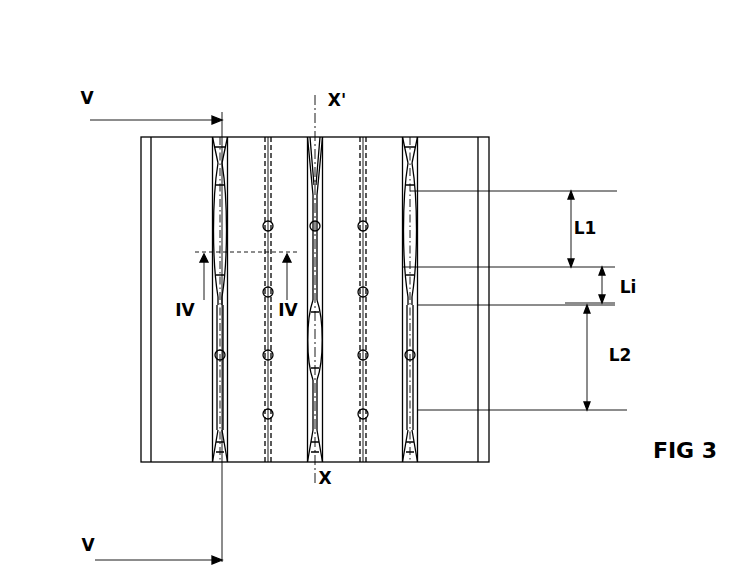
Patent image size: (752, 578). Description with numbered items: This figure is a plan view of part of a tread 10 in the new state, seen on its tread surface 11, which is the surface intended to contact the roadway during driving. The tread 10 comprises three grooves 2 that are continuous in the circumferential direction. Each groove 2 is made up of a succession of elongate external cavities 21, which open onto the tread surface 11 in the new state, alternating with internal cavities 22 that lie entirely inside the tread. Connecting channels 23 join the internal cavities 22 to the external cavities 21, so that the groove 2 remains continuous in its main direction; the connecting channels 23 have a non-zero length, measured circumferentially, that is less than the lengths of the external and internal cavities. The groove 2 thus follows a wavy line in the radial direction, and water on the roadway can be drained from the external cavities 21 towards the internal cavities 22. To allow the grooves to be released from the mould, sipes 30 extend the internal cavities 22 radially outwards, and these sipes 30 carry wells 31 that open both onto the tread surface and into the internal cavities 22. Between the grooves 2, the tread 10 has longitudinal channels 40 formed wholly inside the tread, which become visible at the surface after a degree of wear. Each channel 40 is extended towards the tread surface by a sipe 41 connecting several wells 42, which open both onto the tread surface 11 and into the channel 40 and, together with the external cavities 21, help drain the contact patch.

The groove 2 is at (405, 192).
The tread 10 is at (458, 142).
The tread surface 11 is at (165, 205).
The external cavity 21 is at (218, 205).
The internal cavity 22 is at (312, 222).
The connecting channel 23 is at (218, 287).
The sipe 30 is at (318, 200).
The well 31 is at (415, 355).
The channel 40 is at (403, 137).
The sipe 41 is at (267, 137).
The well 42 is at (312, 228).